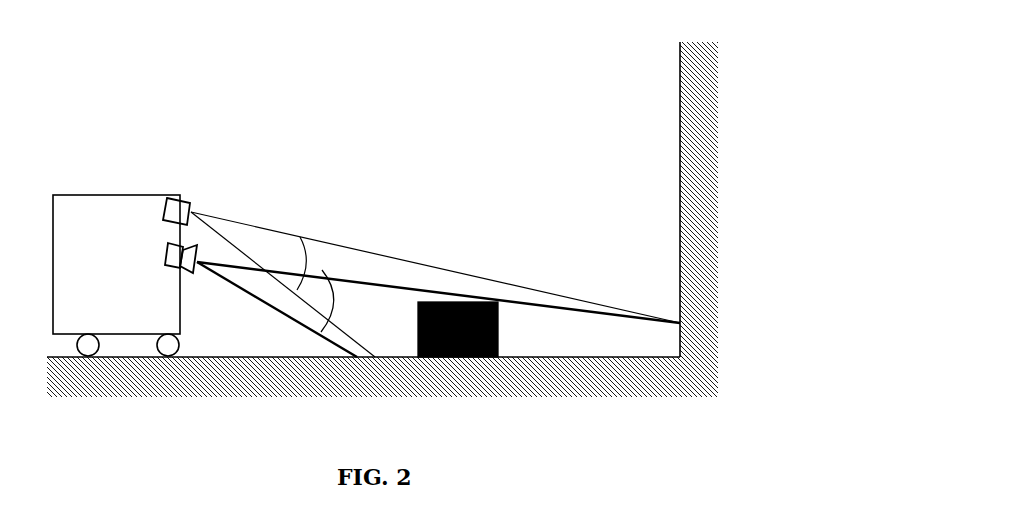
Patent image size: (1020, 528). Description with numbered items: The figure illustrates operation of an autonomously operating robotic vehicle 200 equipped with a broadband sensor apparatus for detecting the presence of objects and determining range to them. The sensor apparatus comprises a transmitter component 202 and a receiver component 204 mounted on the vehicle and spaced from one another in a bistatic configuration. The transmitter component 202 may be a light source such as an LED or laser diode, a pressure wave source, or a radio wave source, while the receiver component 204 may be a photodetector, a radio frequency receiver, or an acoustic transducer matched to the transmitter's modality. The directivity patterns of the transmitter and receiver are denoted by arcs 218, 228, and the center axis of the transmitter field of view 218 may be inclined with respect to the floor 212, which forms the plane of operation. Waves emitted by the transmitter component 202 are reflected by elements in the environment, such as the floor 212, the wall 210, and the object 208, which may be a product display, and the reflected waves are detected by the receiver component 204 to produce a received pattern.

The robotic vehicle 200 is at (116, 275).
The transmitter component 202 is at (185, 202).
The receiver component 204 is at (186, 272).
The object 208 is at (522, 357).
The wall 210 is at (482, 302).
The floor 212 is at (680, 170).
The transmitter field of view 218 is at (323, 243).
The receiver field of view 228 is at (333, 312).